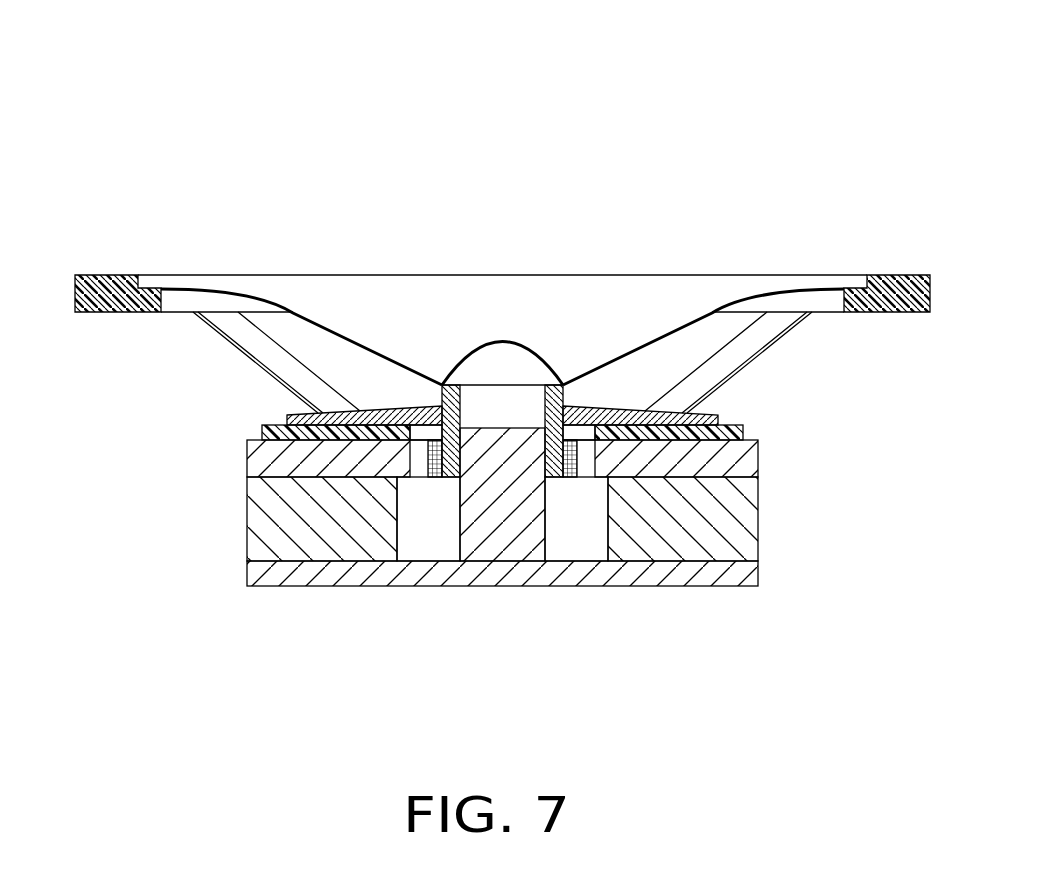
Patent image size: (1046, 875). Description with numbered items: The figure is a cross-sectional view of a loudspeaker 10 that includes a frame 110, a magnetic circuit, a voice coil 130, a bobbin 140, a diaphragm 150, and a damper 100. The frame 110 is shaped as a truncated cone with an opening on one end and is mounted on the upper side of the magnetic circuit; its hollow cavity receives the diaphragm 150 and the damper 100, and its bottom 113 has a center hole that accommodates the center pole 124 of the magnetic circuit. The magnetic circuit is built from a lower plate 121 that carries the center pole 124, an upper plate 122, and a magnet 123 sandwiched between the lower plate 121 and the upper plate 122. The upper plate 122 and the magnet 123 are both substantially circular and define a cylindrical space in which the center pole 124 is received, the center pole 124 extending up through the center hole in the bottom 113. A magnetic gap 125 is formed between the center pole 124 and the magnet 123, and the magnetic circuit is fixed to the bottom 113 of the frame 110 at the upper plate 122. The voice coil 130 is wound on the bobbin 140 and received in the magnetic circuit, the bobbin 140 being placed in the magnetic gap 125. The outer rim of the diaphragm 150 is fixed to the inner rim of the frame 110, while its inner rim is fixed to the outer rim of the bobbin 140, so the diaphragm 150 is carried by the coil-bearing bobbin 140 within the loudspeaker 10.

The loudspeaker 10 is at (506, 90).
The frame 110 is at (103, 282).
The diaphragm 150 is at (363, 338).
The bobbin 140 is at (440, 405).
The damper 100 is at (715, 418).
The bottom 113 is at (742, 431).
The upper plate 122 is at (737, 453).
The voice coil 130 is at (428, 457).
The center pole 124 is at (485, 520).
The magnet 123 is at (735, 513).
The lower plate 121 is at (748, 574).
The magnetic gap 125 is at (557, 503).